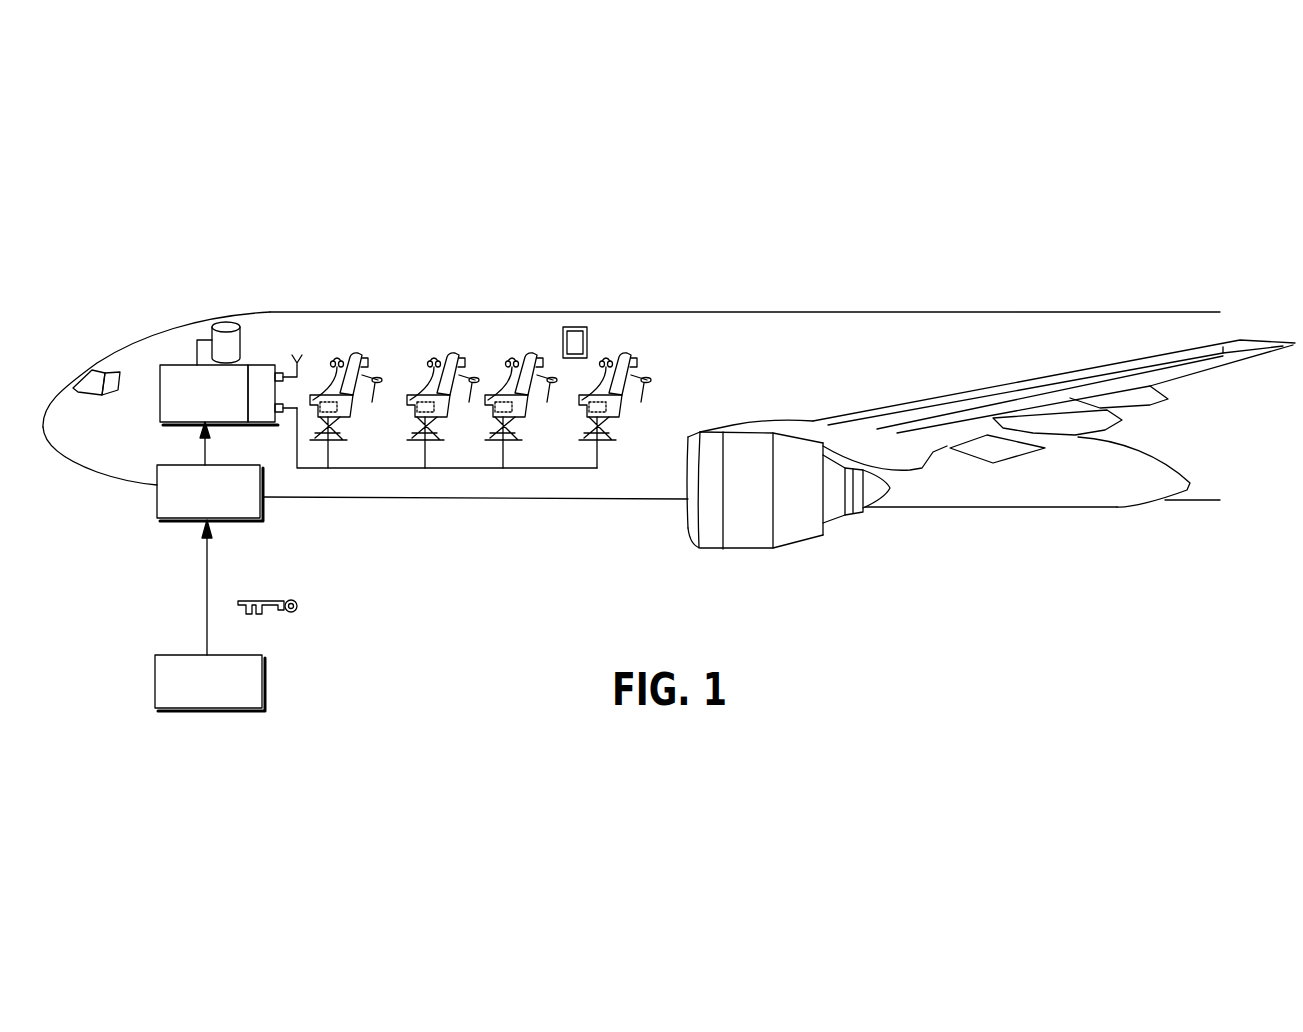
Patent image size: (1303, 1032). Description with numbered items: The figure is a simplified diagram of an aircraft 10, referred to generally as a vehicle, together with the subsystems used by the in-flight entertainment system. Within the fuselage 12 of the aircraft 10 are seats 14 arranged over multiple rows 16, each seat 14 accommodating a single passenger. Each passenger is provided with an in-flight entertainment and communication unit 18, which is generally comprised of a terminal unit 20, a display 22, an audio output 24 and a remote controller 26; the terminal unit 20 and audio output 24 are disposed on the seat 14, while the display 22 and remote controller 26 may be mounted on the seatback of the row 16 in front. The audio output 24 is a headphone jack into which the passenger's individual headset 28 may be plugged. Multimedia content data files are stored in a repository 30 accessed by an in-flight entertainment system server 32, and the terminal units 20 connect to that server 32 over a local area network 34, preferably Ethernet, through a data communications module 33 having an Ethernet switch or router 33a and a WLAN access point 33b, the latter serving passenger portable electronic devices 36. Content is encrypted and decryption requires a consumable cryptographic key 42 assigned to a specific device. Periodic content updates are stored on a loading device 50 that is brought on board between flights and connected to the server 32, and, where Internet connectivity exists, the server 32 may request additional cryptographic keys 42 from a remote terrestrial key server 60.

The aircraft 10 is at (930, 312).
The fuselage 12 is at (689, 403).
The seat 14 is at (440, 415).
The rows 16 is at (313, 301).
The in-flight entertainment and communication unit 18 is at (146, 350).
The terminal unit 20 is at (413, 479).
The display 22 is at (416, 360).
The audio output 24 is at (420, 363).
The remote controller 26 is at (370, 399).
The headset 28 is at (449, 346).
The repository 30 is at (225, 325).
The in-flight entertainment system server 32 is at (181, 365).
The data communications module 33 is at (262, 365).
The Ethernet switch or router 33a is at (283, 372).
The WLAN access point 33b is at (284, 414).
The local area network 34 is at (357, 468).
The portable electronic device 36 is at (588, 340).
The cryptographic key 42 is at (391, 642).
The loading device 50 is at (157, 497).
The key server 60 is at (155, 680).